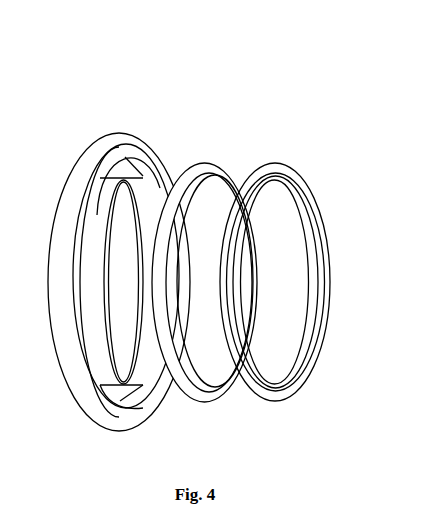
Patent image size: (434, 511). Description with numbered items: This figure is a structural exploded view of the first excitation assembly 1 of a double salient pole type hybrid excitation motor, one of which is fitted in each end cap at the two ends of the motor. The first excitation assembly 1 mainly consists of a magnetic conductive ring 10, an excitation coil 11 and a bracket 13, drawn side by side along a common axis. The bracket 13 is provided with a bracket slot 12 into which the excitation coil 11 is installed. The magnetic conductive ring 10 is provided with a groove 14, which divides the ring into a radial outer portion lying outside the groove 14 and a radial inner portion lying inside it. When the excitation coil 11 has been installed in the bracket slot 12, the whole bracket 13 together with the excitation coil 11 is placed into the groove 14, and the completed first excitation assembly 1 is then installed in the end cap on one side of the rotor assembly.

The first excitation assembly 1 is at (182, 80).
The magnetic conductive ring 10 is at (95, 141).
The excitation coil 11 is at (194, 162).
The bracket slot 12 is at (266, 163).
The bracket 13 is at (329, 286).
The groove 14 is at (118, 397).